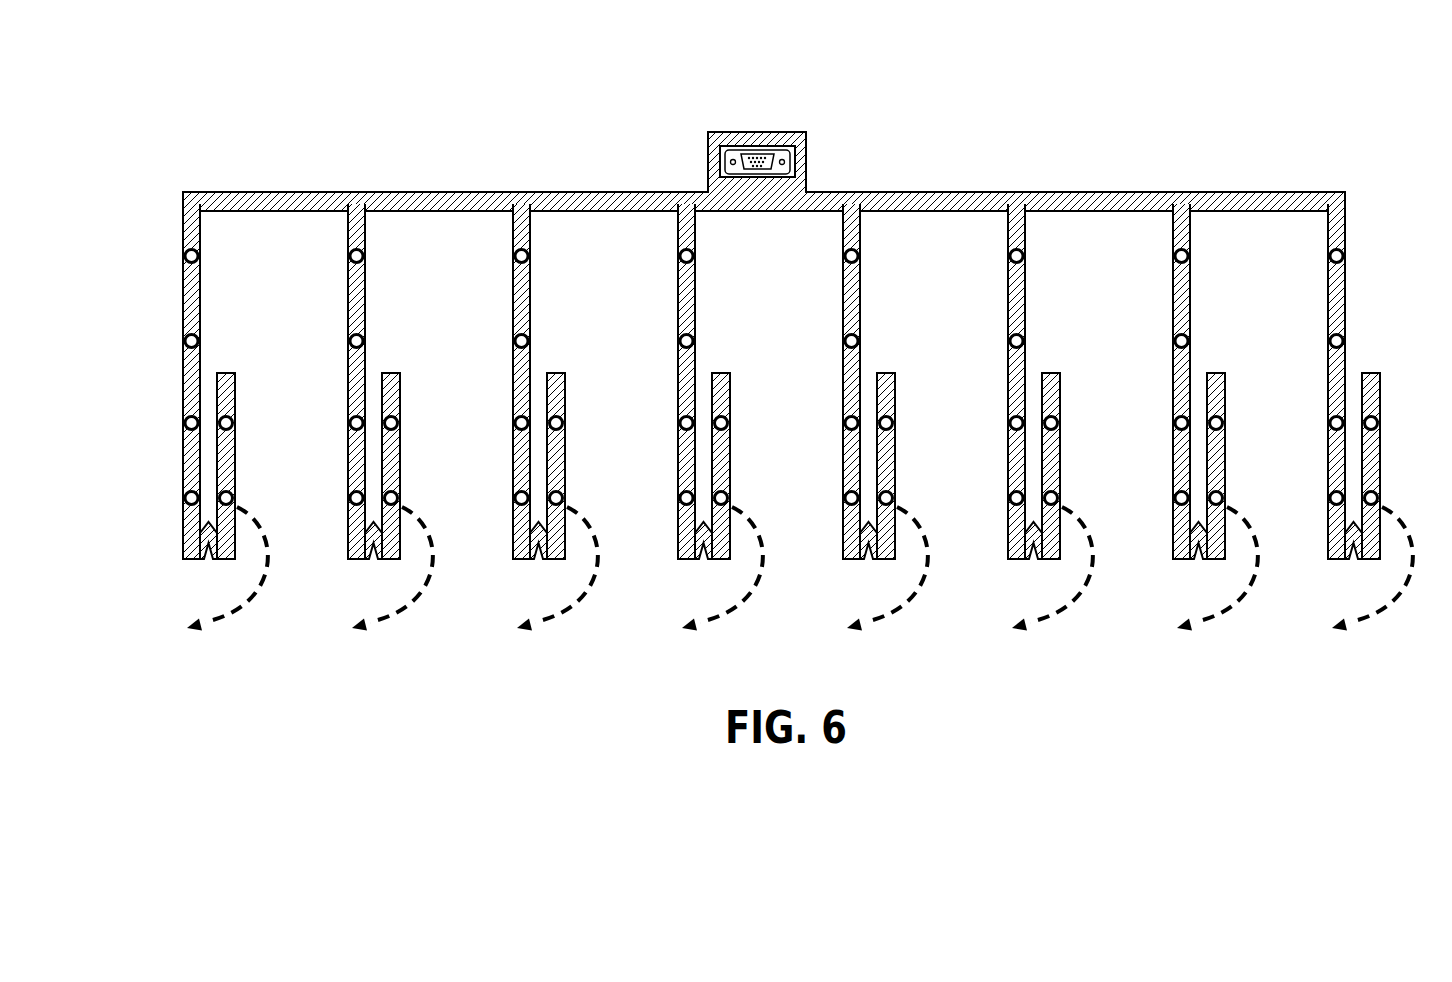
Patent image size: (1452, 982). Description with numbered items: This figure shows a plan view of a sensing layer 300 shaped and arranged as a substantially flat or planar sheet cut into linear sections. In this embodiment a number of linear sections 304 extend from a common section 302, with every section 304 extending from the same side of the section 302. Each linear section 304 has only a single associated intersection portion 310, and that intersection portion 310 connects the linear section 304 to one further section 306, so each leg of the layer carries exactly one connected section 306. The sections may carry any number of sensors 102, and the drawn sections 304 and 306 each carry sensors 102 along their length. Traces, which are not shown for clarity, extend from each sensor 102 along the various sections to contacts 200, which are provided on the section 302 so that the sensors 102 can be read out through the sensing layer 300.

The sensing layer 300 is at (521, 100).
The section 302 is at (258, 192).
The linear section 304 is at (203, 308).
The section 306 is at (236, 460).
The sensor 102 is at (184, 420).
The intersection portion 310 is at (210, 545).
The contact 200 is at (763, 148).